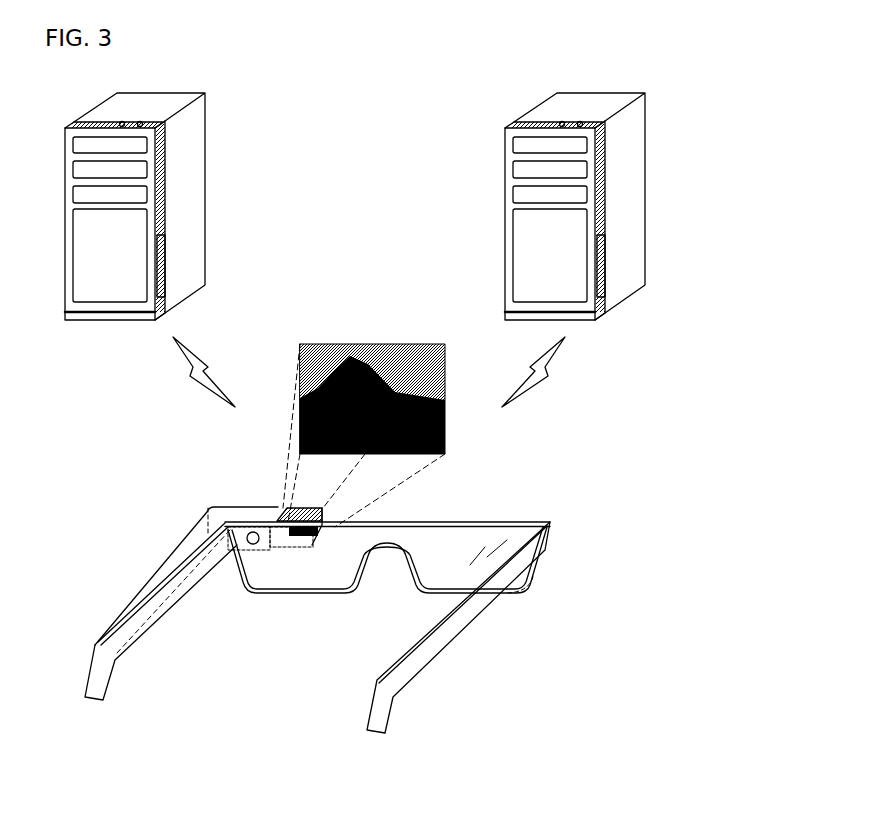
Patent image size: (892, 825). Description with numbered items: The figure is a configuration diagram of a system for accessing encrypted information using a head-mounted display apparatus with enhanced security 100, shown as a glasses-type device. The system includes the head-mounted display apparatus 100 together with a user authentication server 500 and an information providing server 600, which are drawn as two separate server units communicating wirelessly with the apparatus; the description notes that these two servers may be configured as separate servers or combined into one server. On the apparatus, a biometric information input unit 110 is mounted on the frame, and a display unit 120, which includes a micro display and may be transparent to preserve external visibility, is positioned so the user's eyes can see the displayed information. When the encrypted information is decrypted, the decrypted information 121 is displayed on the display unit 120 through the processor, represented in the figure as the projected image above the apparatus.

The head-mounted display apparatus with enhanced security 100 is at (463, 613).
The biometric information input unit 110 is at (247, 540).
The display unit 120 is at (290, 547).
The decrypted information 121 is at (318, 513).
The user authentication server 500 is at (205, 93).
The information providing server 600 is at (645, 93).